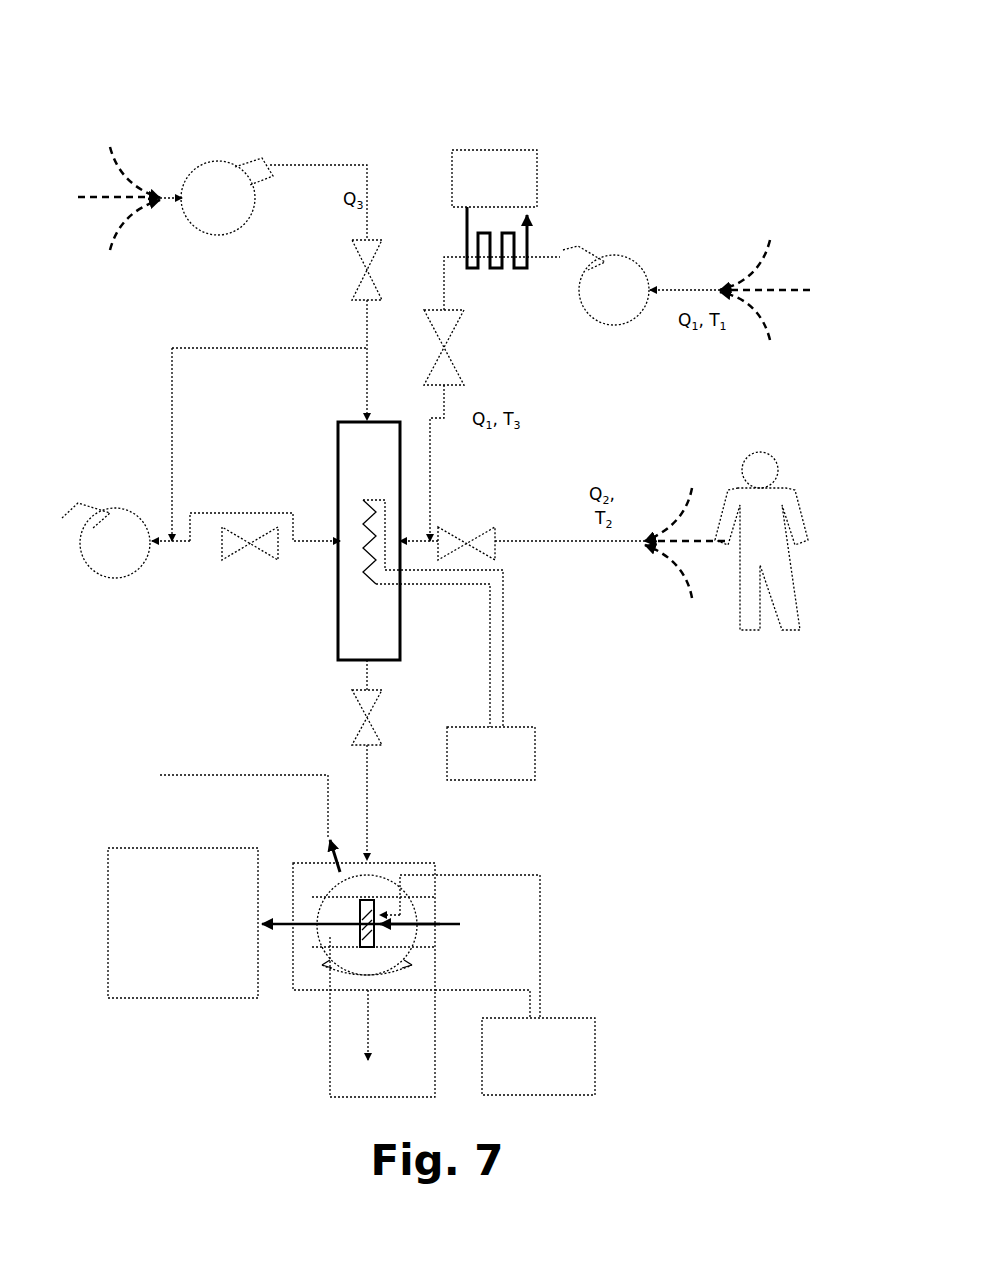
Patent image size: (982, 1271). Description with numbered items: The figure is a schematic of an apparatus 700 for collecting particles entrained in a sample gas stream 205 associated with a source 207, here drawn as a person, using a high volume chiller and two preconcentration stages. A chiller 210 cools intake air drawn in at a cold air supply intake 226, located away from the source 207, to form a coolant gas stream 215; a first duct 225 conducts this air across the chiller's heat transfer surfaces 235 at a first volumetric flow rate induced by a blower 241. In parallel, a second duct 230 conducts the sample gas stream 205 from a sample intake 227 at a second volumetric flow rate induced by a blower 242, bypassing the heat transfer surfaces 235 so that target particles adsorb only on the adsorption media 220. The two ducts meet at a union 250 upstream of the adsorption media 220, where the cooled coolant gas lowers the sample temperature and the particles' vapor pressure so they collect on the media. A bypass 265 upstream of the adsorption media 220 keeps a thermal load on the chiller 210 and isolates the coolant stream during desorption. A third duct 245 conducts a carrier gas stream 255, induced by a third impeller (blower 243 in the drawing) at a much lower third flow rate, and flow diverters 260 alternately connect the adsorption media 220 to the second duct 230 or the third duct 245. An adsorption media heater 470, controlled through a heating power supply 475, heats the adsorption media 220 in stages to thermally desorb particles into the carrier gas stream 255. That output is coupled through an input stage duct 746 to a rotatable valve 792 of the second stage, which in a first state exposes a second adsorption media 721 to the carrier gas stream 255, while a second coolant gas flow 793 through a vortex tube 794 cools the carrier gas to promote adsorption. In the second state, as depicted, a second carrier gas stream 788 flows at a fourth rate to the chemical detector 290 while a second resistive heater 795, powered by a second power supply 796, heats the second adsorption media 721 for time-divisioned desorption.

The apparatus 700 is at (160, 90).
The carrier gas stream 255 is at (121, 198).
The blower 243 is at (274, 199).
The flow diverters 260 is at (367, 272).
The third duct 245 is at (367, 338).
The blower 242 is at (201, 540).
The adsorption media 220 is at (369, 541).
The adsorption media heater 470 is at (378, 543).
The heating power supply 475 is at (491, 753).
The chiller 210 is at (494, 178).
The heat transfer surfaces 235 is at (535, 240).
The first duct 225 is at (444, 250).
The bypass 265 is at (444, 348).
The blower 241 is at (641, 285).
The cold air supply intake 226 is at (718, 290).
The coolant gas stream 215 is at (769, 290).
The union 250 is at (515, 541).
The second duct 230 is at (590, 545).
The sample intake 227 is at (645, 535).
The sample gas stream 205 is at (750, 541).
The source 207 is at (761, 652).
The second coolant gas flow 793 is at (198, 772).
The second resistive heater 795 is at (345, 878).
The input stage duct 746 is at (367, 800).
The vortex tube 794 is at (367, 860).
The second adsorption media 721 is at (395, 875).
The second carrier gas stream 788 is at (455, 920).
The rotatable valve 792 is at (440, 962).
The chemical detector 290 is at (183, 923).
The second power supply 796 is at (538, 1056).